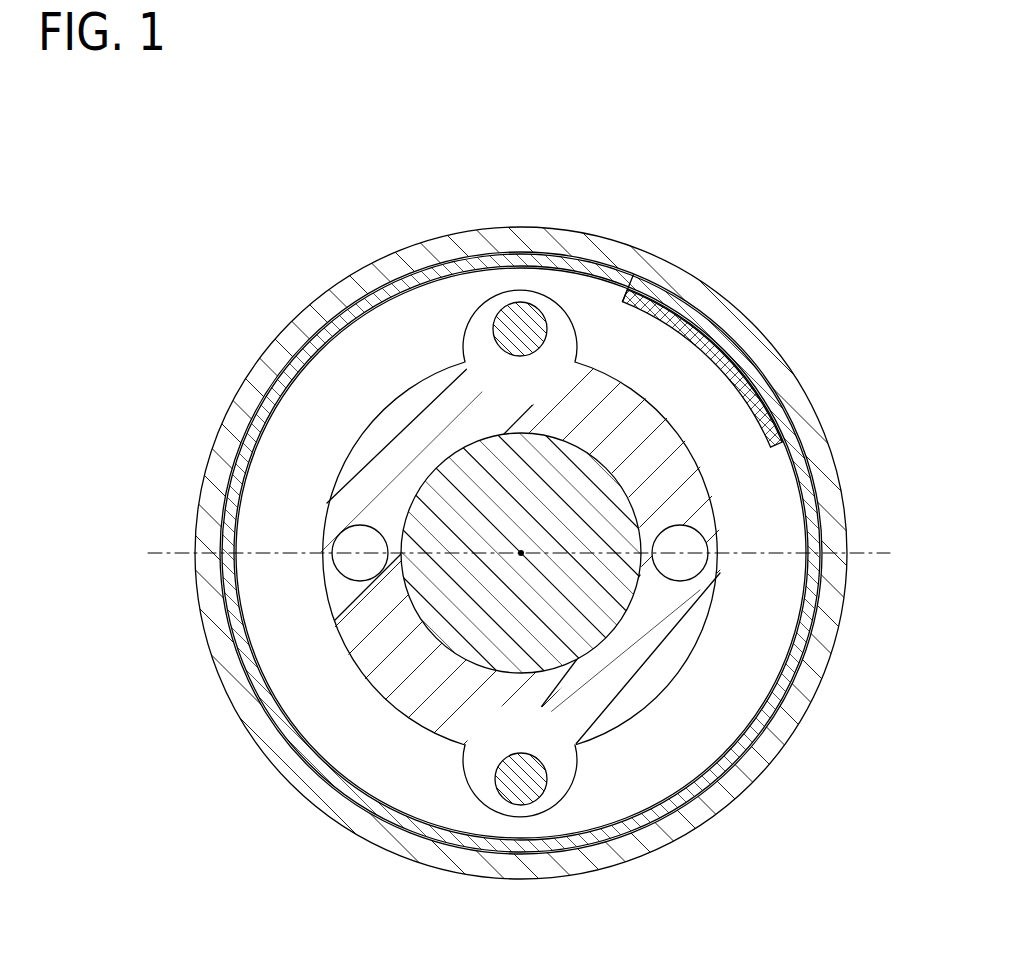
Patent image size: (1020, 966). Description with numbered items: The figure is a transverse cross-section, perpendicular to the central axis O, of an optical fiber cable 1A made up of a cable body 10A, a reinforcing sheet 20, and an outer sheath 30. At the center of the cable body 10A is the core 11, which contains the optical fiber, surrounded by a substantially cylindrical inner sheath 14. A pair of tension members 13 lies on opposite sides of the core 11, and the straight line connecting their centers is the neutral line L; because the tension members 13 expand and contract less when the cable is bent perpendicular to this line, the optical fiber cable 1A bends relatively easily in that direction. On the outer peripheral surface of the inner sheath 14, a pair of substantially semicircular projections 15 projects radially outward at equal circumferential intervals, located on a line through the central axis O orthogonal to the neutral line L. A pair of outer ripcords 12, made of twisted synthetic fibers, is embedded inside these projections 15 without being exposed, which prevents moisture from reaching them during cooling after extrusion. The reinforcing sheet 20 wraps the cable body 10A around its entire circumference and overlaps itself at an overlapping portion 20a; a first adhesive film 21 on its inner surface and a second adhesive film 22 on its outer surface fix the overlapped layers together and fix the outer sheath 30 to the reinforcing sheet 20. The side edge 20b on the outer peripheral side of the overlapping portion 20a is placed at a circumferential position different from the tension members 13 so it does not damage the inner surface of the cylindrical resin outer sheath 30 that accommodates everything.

The optical fiber cable 1A is at (183, 293).
The cable body 10A is at (425, 483).
The core 11 is at (521, 556).
The outer ripcord 12 is at (519, 302).
The tension member 13 is at (347, 540).
The inner sheath 14 is at (367, 632).
The projection 15 is at (470, 320).
The reinforcing sheet 20 is at (600, 483).
The overlapping portion 20a is at (785, 435).
The side edge 20b is at (617, 273).
The first adhesive film 21 is at (580, 287).
The second adhesive film 22 is at (597, 297).
The outer sheath 30 is at (430, 262).
The neutral line L is at (858, 552).
The central axis O is at (593, 653).